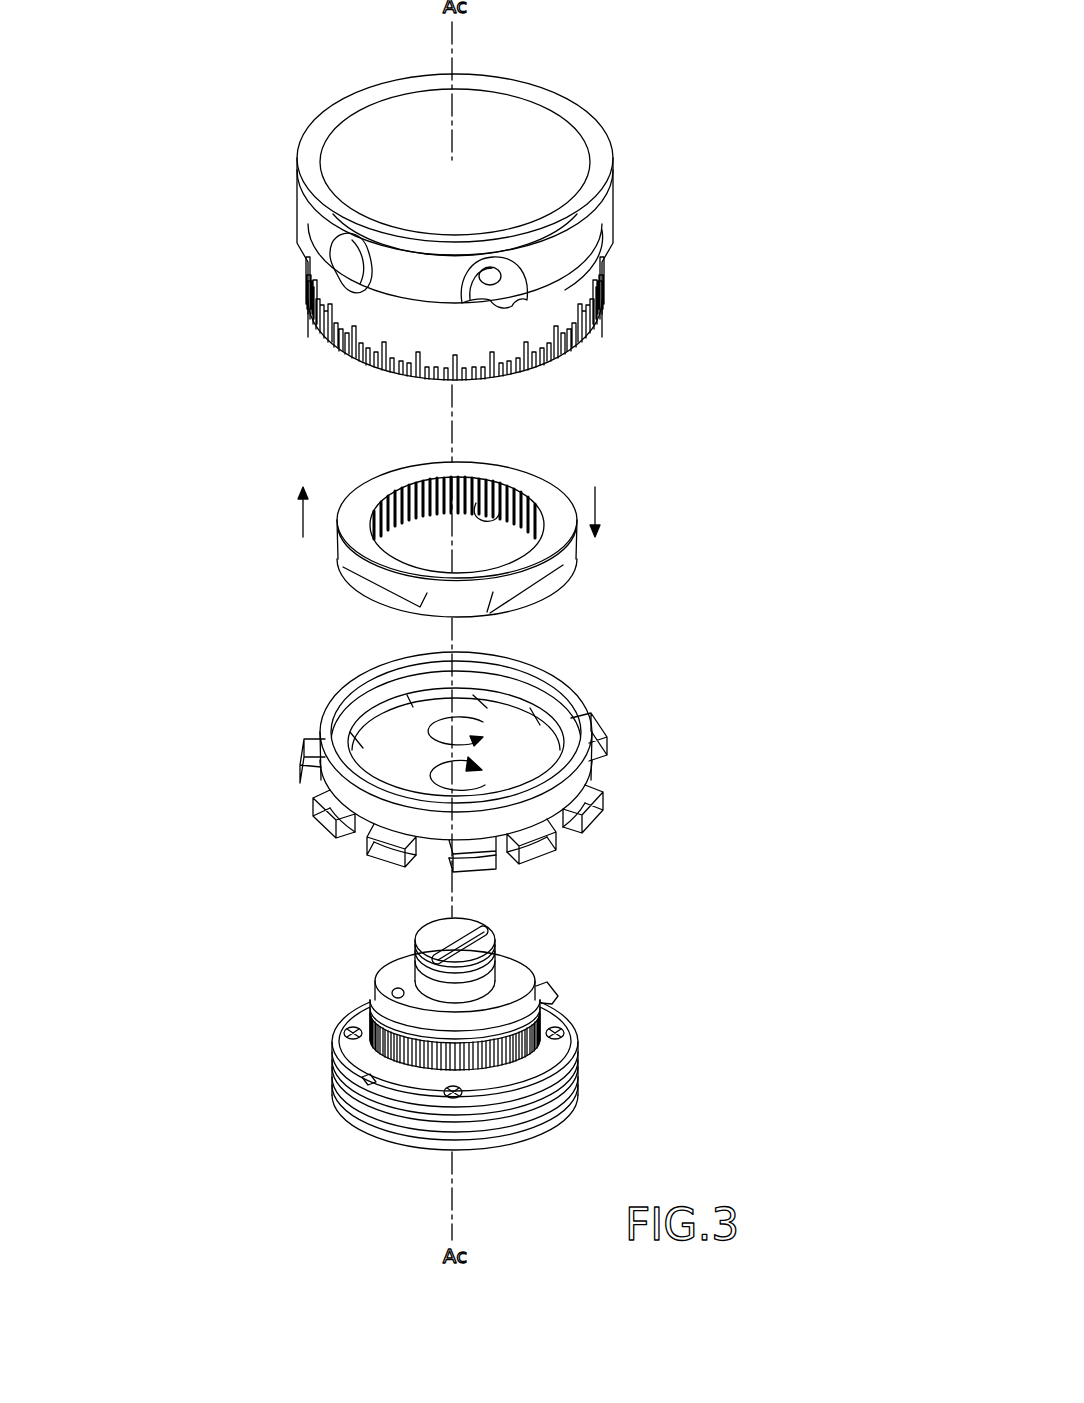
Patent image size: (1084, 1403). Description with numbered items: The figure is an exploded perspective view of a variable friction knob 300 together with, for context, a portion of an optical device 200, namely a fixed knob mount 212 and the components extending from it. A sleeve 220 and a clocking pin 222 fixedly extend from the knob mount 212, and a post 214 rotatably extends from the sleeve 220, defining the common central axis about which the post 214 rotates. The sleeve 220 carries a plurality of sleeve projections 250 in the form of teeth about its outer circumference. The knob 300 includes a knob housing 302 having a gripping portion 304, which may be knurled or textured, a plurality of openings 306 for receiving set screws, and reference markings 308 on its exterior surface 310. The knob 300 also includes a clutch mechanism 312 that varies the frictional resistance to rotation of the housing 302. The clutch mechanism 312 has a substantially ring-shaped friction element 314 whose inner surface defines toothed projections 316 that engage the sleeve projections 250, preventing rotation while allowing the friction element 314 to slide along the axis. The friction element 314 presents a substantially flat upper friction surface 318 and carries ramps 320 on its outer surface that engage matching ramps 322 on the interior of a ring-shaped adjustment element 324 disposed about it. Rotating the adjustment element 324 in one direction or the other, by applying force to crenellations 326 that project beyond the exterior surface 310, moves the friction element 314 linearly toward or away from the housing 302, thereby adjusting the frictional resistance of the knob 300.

The optical device 200 is at (695, 1045).
The knob mount 212 is at (568, 1046).
The post 214 is at (499, 937).
The sleeve 220 is at (332, 1047).
The clocking pin 222 is at (392, 992).
The sleeve projections 250 is at (545, 983).
The variable friction knob 300 is at (703, 93).
The knob housing 302 is at (300, 166).
The gripping portion 304 is at (294, 229).
The openings 306 is at (334, 270).
The reference markings 308 is at (366, 360).
The exterior surface 310 is at (602, 270).
The clutch mechanism 312 is at (538, 128).
The friction element 314 is at (545, 495).
The toothed projections 316 is at (478, 503).
The friction surface 318 is at (560, 548).
The ramps 320 is at (418, 603).
The ramps 322 is at (474, 705).
The adjustment element 324 is at (566, 694).
The crenellations 326 is at (608, 769).